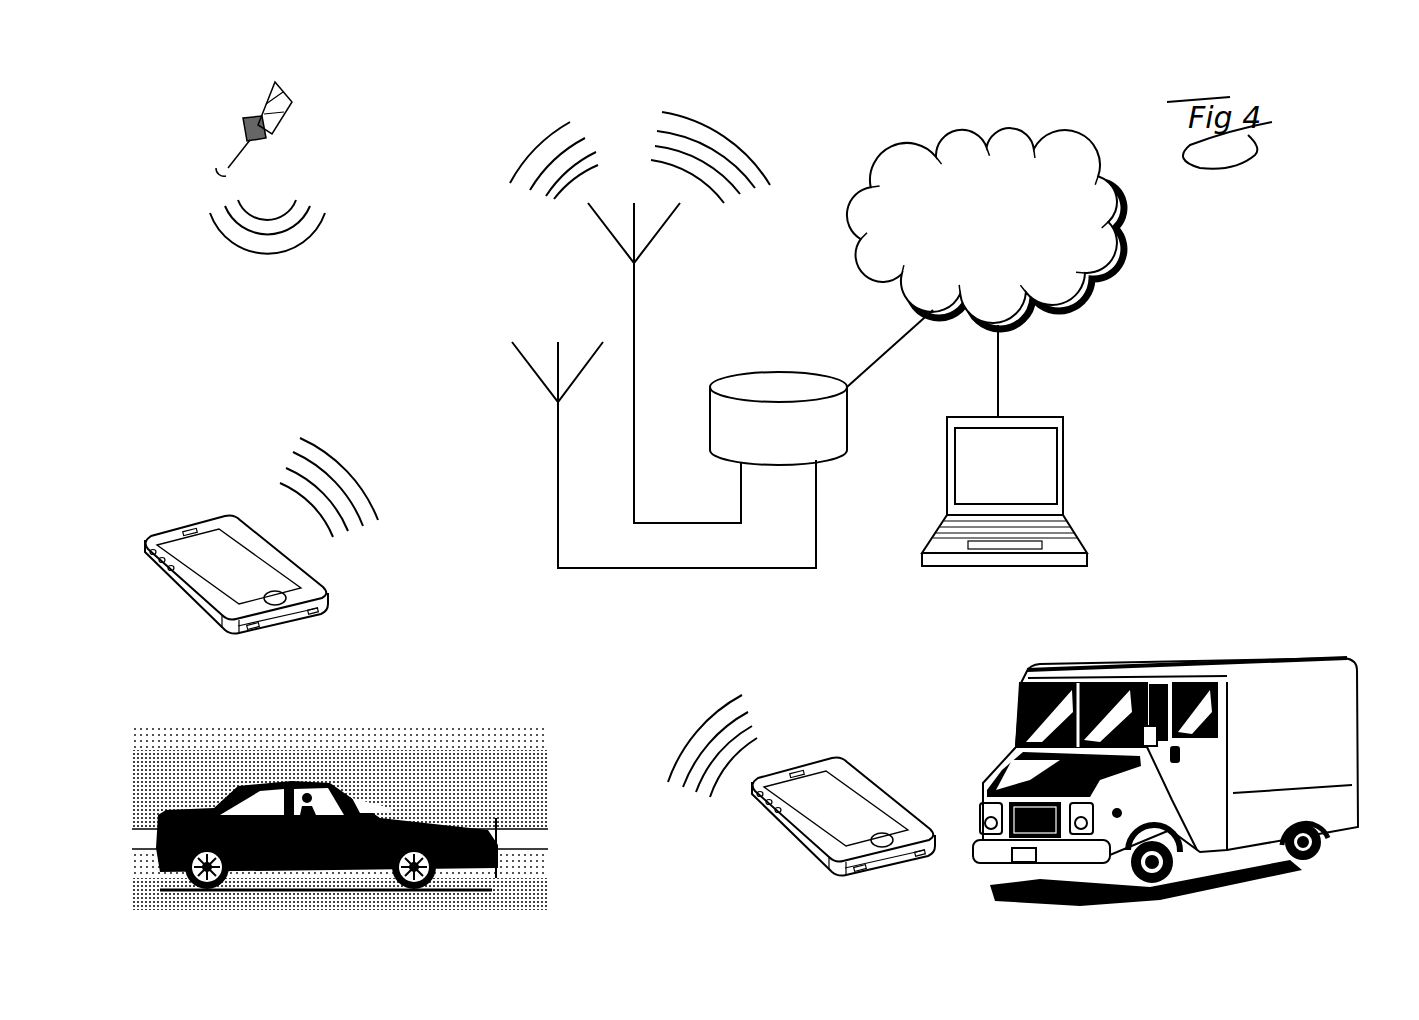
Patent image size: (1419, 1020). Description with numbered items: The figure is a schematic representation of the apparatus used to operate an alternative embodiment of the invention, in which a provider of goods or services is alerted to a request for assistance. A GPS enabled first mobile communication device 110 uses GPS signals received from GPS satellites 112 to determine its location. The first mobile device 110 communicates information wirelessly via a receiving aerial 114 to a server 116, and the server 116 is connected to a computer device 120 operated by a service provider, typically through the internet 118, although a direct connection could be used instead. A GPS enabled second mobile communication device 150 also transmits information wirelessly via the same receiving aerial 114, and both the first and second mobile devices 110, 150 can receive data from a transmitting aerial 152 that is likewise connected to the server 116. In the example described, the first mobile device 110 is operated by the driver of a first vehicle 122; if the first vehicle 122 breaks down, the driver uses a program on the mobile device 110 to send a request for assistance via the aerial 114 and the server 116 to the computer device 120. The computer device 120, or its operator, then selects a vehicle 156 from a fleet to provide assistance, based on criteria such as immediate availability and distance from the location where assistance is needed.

The first mobile communication device 110 is at (348, 587).
The GPS satellites 112 is at (303, 120).
The receiving aerial 114 is at (527, 397).
The server 116 is at (828, 448).
The internet 118 is at (890, 165).
The computer device 120 is at (1049, 443).
The first vehicle 122 is at (602, 878).
The second mobile communication device 150 is at (882, 780).
The transmitting aerial 152 is at (645, 260).
The vehicle 156 is at (1247, 610).